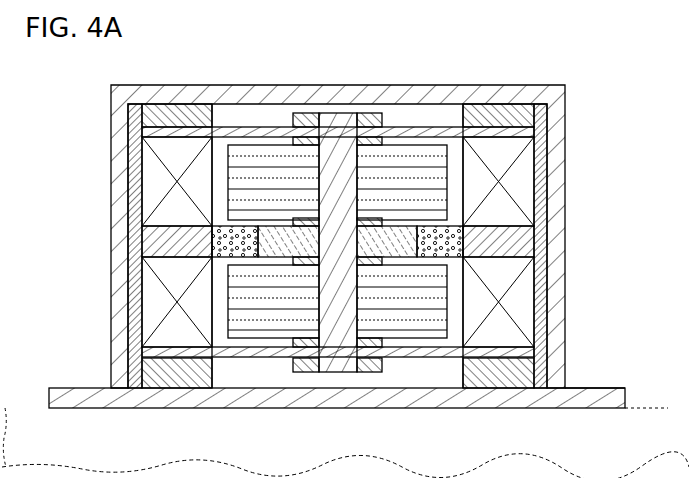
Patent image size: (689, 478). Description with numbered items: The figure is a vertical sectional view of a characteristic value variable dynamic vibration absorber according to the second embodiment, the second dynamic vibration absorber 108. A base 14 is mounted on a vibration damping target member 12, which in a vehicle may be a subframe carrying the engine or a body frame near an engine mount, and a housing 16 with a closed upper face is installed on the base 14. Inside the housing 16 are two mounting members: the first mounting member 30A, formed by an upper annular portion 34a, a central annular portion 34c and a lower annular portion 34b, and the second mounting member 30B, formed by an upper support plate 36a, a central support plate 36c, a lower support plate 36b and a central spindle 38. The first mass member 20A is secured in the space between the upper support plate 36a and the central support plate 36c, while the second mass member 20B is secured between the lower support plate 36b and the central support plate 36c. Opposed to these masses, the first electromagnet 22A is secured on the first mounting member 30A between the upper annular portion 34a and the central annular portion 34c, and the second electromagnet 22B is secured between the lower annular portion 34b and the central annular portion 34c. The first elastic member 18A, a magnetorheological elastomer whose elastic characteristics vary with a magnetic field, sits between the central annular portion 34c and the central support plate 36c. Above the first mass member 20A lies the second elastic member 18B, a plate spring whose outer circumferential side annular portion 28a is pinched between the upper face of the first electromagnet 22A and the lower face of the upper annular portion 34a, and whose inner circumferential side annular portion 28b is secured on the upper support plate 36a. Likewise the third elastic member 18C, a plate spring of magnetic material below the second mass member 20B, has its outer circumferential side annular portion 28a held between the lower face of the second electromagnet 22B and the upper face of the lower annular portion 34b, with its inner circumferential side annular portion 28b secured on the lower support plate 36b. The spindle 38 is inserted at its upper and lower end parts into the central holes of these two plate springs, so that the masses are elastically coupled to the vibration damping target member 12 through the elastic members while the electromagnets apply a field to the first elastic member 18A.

The electric actuator / motor 108 is at (44, 71).
The housing 16 is at (160, 85).
The vibration damping target member 12 is at (343, 381).
The base 14 is at (598, 388).
The first mounting member 30A is at (508, 76).
The second mounting member 30B is at (298, 106).
The upper annular portion 34a is at (517, 113).
The lower annular portion 34b is at (517, 383).
The central annular portion 34c is at (520, 243).
The outer circumferential side annular portion 28a is at (508, 242).
The inner circumferential side annular portion 28b is at (372, 137).
The upper support plate 36a is at (365, 113).
The lower support plate 36b is at (362, 367).
The central support plate 36c is at (402, 250).
The spindle 38 is at (341, 113).
The first elastic member 18A is at (429, 270).
The second elastic member 18B is at (438, 119).
The third elastic member 18C is at (402, 366).
The first mass member 20A is at (233, 173).
The second mass member 20B is at (233, 292).
The first electromagnet 22A is at (525, 170).
The second electromagnet 22B is at (527, 295).